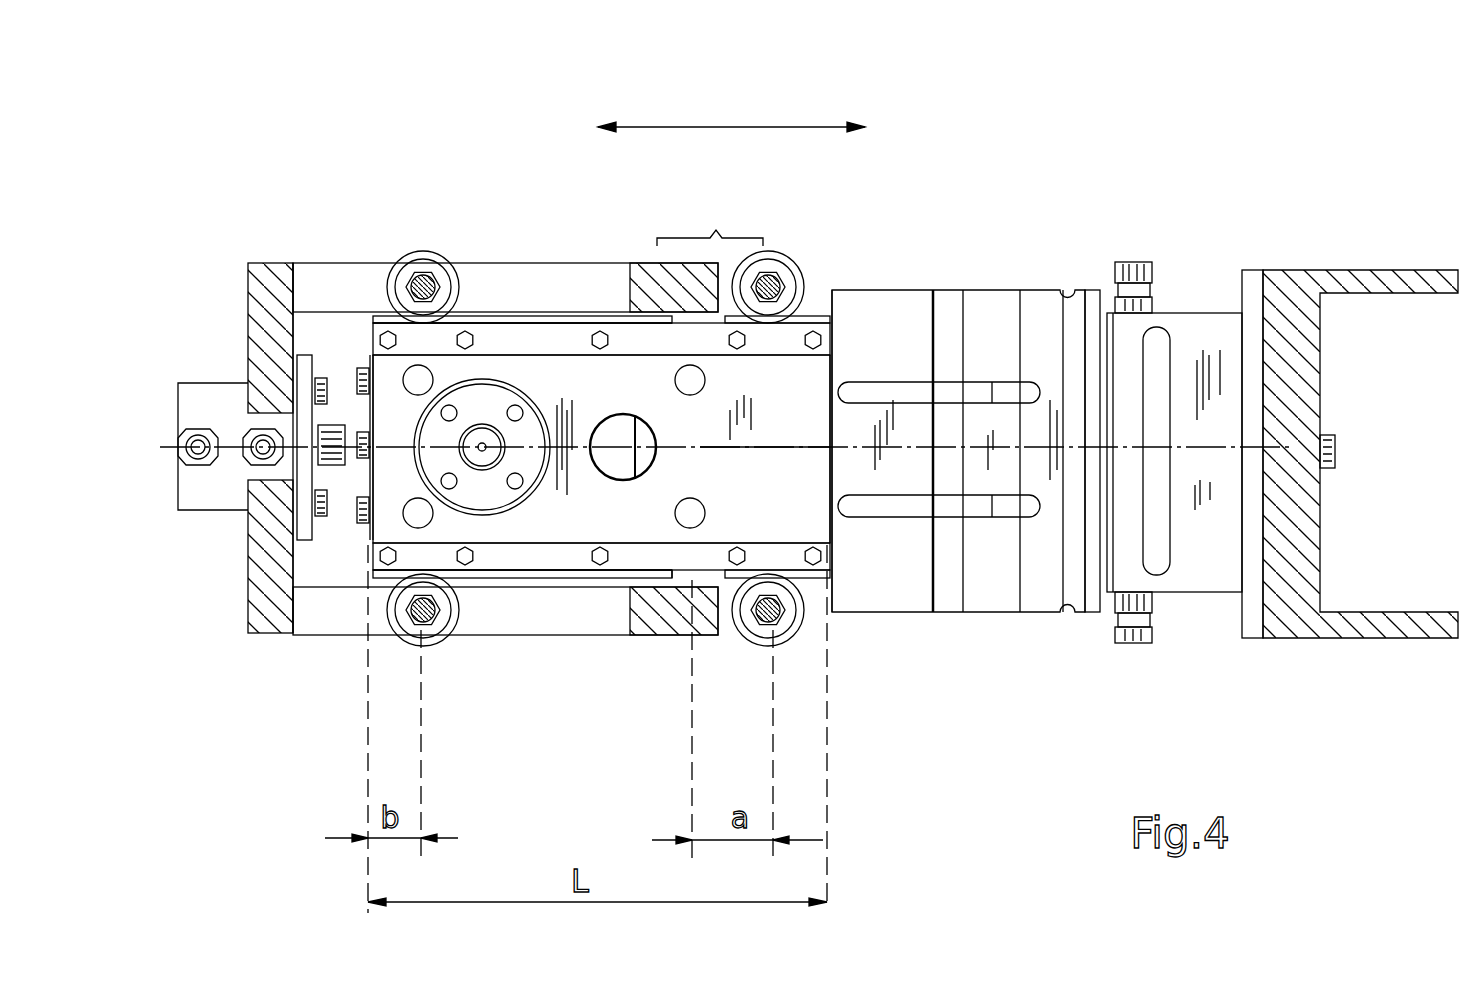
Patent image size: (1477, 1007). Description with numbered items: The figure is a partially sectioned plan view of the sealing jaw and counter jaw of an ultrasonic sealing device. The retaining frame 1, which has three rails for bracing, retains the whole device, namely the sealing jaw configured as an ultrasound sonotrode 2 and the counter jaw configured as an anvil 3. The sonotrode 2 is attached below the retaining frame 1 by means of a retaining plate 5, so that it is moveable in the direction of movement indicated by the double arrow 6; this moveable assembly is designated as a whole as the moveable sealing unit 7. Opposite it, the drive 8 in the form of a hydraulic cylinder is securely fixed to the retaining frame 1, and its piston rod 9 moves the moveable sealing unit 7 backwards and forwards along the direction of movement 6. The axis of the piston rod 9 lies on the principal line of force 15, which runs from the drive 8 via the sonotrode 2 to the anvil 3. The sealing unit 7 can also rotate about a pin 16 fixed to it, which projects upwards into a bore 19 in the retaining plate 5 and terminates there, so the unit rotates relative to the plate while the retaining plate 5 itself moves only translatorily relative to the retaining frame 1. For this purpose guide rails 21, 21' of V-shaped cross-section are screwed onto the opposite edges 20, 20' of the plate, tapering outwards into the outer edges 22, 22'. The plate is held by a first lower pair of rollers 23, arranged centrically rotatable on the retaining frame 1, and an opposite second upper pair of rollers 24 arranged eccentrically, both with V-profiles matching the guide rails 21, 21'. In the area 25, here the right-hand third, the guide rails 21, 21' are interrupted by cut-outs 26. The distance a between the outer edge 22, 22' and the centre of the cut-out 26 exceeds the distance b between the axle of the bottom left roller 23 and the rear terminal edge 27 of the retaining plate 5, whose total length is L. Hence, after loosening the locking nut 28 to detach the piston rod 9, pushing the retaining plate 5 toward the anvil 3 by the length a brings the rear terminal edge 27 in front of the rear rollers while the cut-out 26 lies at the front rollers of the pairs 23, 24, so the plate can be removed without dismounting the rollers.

The retaining frame 1 is at (270, 300).
The sonotrode 2 is at (895, 583).
The anvil 3 is at (1203, 562).
The retaining plate 5 is at (780, 519).
The direction of movement 6 is at (727, 126).
The moveable sealing unit 7 is at (543, 520).
The drive 8 is at (205, 490).
The piston rod 9 is at (332, 410).
The principal line of force 15 is at (772, 447).
The pin 16 is at (608, 428).
The bore 19 is at (633, 414).
The edge 20 is at (589, 236).
The edge 20' is at (601, 643).
The guide rail 21 is at (522, 242).
The guide rail 21' is at (522, 647).
The outer edge 22 is at (630, 267).
The outer edge 22' is at (547, 650).
The first lower pair of rollers 23 is at (418, 625).
The second upper pair of rollers 24 is at (770, 268).
The area 25 is at (716, 231).
The cut-out 26 is at (692, 577).
The rear terminal edge 27 is at (368, 542).
The locking nut 28 is at (312, 475).